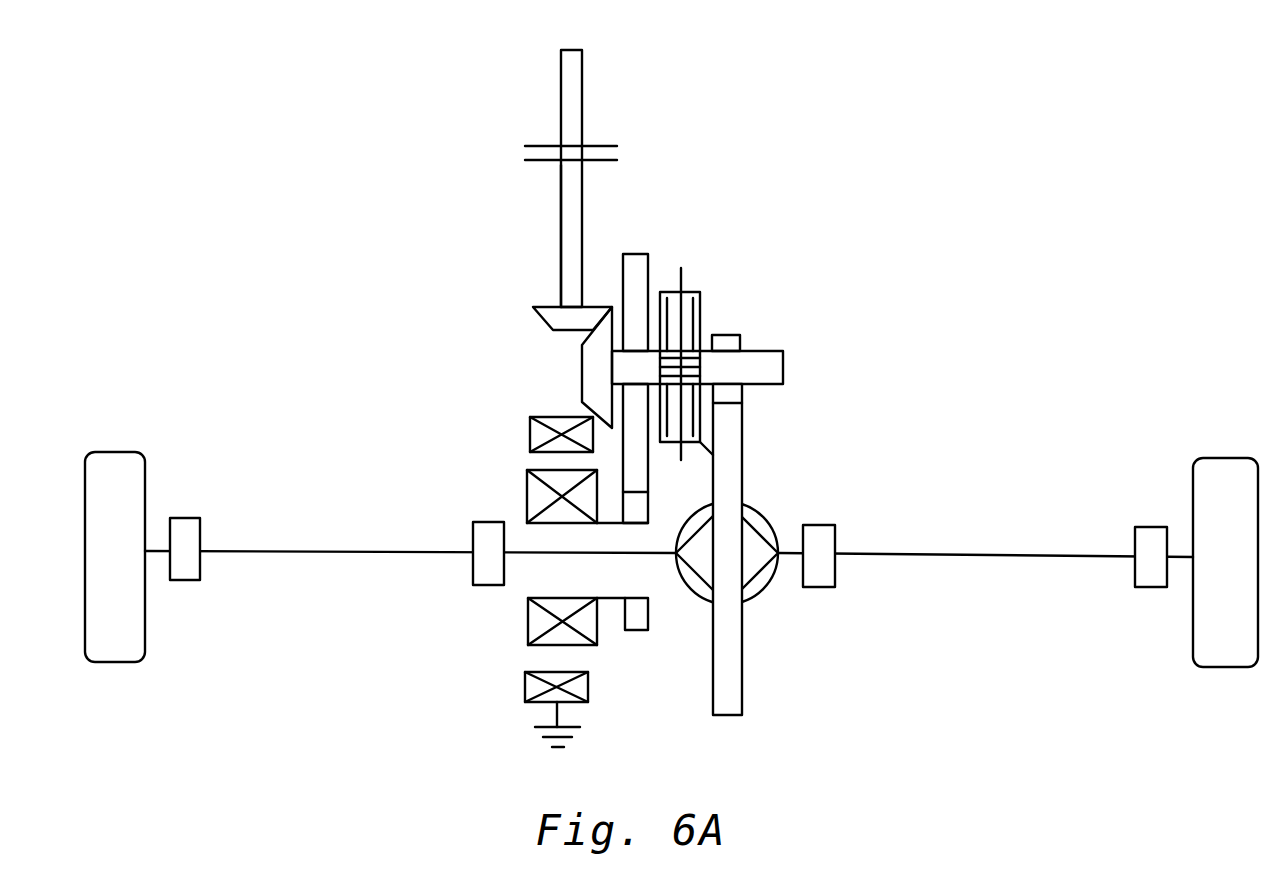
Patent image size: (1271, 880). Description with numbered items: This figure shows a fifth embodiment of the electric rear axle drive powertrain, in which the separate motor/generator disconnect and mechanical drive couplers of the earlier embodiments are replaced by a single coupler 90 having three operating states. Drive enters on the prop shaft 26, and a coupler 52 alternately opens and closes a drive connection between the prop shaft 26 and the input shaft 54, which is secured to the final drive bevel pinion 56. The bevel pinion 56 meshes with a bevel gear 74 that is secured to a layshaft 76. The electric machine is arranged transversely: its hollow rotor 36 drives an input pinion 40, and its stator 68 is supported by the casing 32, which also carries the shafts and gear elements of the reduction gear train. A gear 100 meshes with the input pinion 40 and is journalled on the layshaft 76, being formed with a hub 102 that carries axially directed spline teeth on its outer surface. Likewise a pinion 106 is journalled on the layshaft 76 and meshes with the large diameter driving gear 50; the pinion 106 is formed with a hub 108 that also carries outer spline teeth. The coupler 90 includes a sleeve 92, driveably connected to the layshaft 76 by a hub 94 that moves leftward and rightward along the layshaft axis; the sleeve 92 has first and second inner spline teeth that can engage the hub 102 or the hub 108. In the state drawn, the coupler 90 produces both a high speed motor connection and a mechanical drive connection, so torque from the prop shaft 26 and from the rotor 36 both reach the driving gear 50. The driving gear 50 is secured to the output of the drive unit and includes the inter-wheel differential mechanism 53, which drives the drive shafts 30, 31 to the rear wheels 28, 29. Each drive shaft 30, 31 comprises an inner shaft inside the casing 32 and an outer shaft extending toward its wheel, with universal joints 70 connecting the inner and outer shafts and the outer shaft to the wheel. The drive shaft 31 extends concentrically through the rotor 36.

The prop shaft 26 is at (560, 100).
The rear wheel 28 is at (1232, 667).
The rear wheel 29 is at (118, 663).
The drive shaft 30 is at (988, 558).
The drive shaft 31 is at (325, 553).
The casing 32 is at (540, 735).
The hollow rotor 36 is at (527, 492).
The input pinion 40 is at (630, 630).
The large diameter driving gear 50 is at (723, 717).
The coupler 52 is at (607, 143).
The inter-wheel differential mechanism 53 is at (757, 602).
The input shaft 54 is at (560, 213).
The final drive bevel pinion 56 is at (533, 318).
The stator 68 is at (525, 686).
The universal joints 70 is at (185, 582).
The bevel gear 74 is at (582, 367).
The layshaft 76 is at (783, 368).
The coupler 90 is at (707, 308).
The sleeve 92 is at (690, 443).
The hub 94 is at (683, 295).
The gear 100 is at (640, 250).
The hub 102 is at (667, 417).
The pinion 106 is at (728, 334).
The hub 108 is at (698, 412).